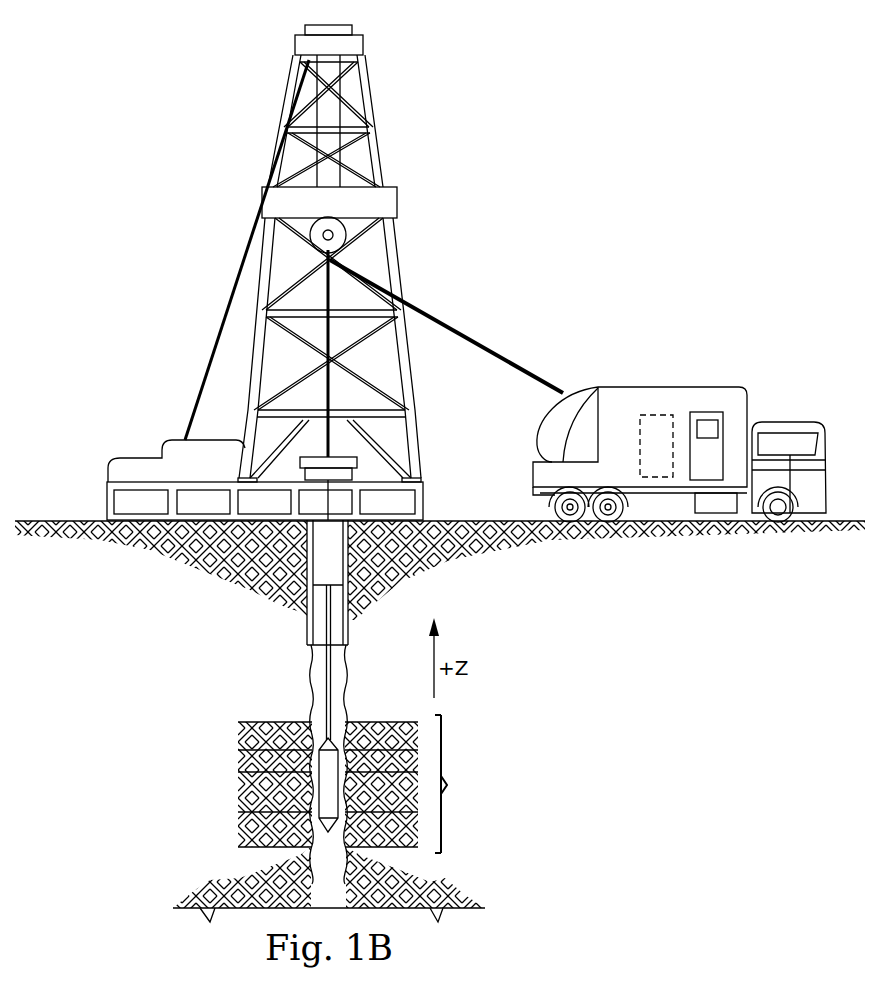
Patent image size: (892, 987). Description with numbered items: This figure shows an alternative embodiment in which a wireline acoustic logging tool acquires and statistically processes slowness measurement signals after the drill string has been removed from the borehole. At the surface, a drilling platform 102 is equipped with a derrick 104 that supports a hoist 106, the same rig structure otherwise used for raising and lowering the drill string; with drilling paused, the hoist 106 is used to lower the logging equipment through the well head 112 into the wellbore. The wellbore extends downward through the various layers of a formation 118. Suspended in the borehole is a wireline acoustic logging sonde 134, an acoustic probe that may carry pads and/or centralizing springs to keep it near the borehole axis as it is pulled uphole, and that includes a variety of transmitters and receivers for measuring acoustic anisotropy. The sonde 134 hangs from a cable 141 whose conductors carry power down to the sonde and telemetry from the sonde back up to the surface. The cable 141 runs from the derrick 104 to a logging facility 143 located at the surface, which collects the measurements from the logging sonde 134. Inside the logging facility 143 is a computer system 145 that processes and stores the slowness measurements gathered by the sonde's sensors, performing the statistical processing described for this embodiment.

The drilling platform 102 is at (106, 503).
The derrick 104 is at (415, 440).
The hoist 106 is at (322, 243).
The well head 112 is at (313, 456).
The formation 118 is at (367, 784).
The wireline acoustic logging sonde 134 is at (318, 790).
The cable 141 is at (455, 328).
The logging facility 143 is at (707, 387).
The computer system 145 is at (647, 415).